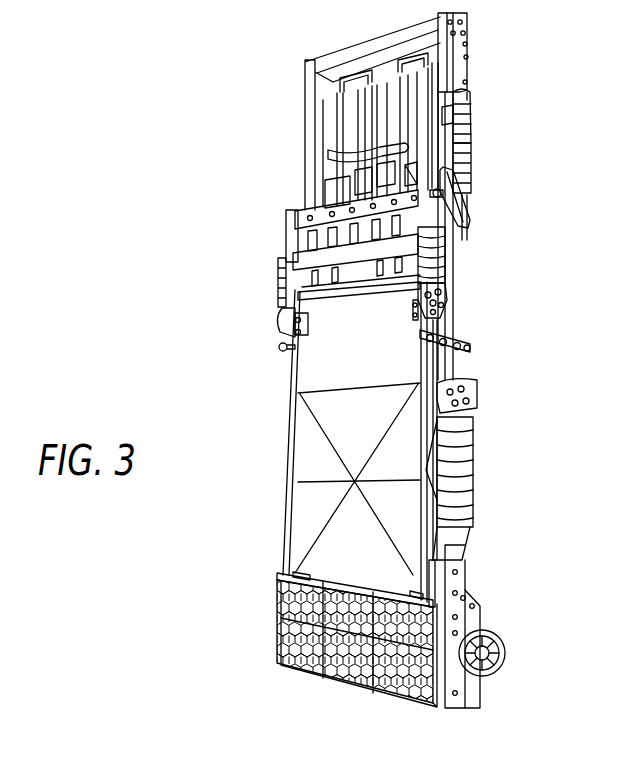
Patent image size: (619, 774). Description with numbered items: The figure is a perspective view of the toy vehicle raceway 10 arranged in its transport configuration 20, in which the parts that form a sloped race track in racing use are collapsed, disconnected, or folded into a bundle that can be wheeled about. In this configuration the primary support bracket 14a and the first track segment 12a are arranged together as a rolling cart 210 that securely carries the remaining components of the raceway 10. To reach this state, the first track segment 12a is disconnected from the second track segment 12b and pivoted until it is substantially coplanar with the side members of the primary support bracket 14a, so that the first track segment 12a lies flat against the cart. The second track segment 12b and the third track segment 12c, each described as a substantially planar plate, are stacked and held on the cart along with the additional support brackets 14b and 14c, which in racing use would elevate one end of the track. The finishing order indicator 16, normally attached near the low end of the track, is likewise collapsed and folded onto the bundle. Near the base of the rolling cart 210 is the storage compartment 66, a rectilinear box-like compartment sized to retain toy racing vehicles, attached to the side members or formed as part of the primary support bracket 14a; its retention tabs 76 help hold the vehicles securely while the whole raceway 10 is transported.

The toy vehicle raceway 10 is at (208, 97).
The transport configuration 20 is at (208, 125).
The rolling cart 210 is at (208, 153).
The finishing order indicator 16 is at (288, 220).
The primary support bracket 14a is at (458, 548).
The support bracket 14b is at (466, 93).
The support bracket 14c is at (443, 263).
The first track segment 12a is at (460, 375).
The second track segment 12b is at (450, 357).
The third track segment 12c is at (307, 363).
The retention tabs 76 is at (413, 592).
The storage compartment 66 is at (360, 680).